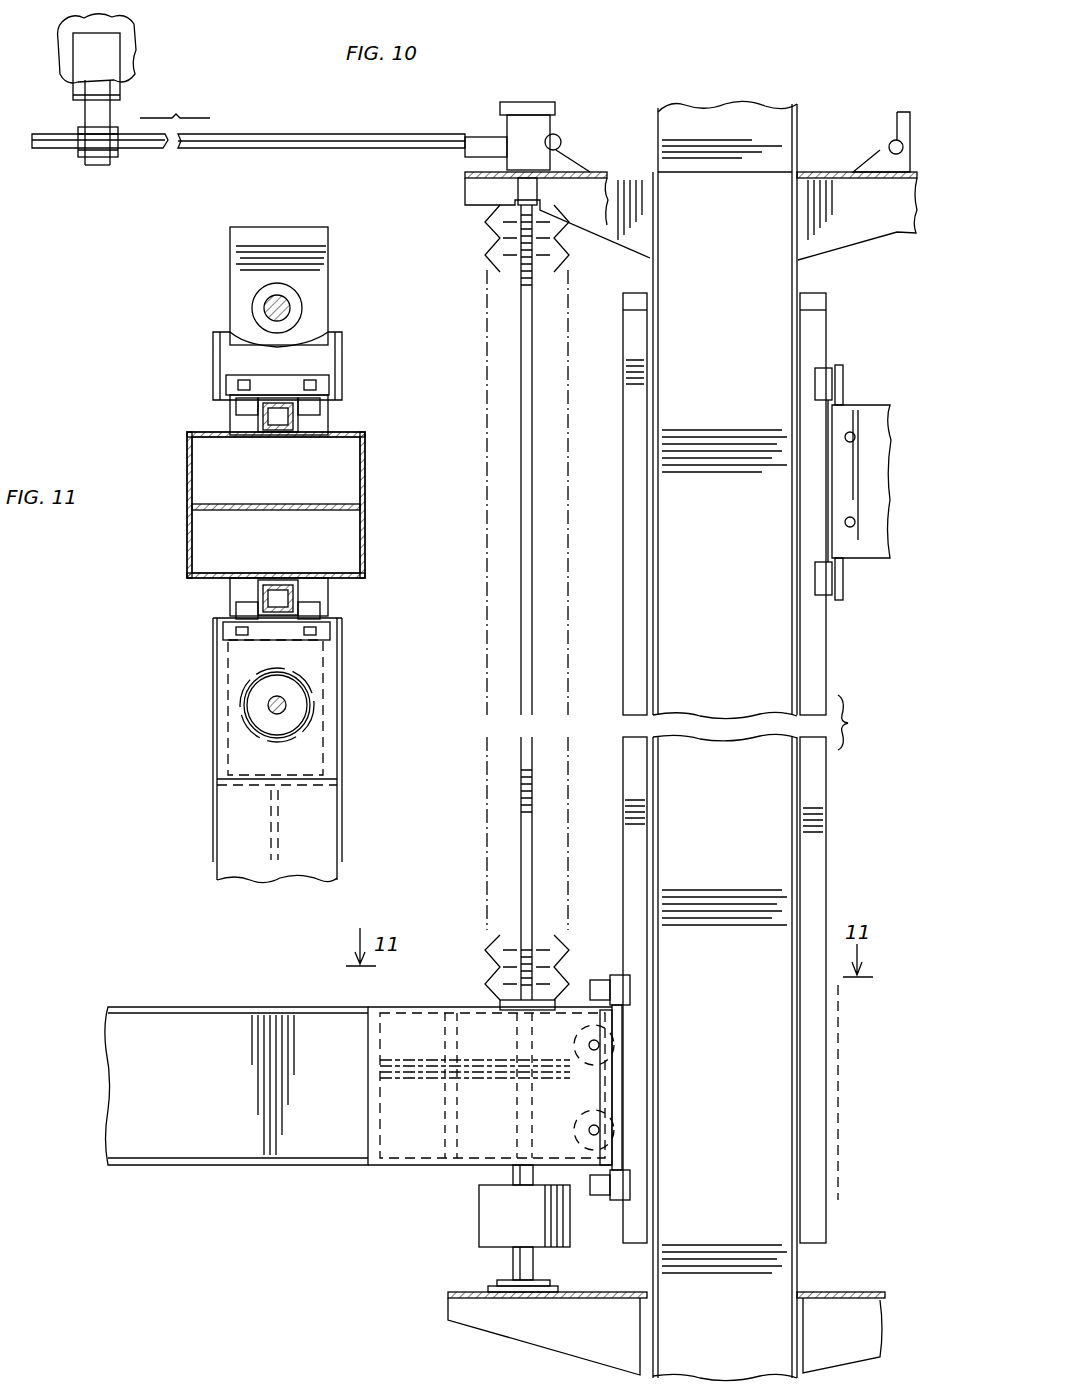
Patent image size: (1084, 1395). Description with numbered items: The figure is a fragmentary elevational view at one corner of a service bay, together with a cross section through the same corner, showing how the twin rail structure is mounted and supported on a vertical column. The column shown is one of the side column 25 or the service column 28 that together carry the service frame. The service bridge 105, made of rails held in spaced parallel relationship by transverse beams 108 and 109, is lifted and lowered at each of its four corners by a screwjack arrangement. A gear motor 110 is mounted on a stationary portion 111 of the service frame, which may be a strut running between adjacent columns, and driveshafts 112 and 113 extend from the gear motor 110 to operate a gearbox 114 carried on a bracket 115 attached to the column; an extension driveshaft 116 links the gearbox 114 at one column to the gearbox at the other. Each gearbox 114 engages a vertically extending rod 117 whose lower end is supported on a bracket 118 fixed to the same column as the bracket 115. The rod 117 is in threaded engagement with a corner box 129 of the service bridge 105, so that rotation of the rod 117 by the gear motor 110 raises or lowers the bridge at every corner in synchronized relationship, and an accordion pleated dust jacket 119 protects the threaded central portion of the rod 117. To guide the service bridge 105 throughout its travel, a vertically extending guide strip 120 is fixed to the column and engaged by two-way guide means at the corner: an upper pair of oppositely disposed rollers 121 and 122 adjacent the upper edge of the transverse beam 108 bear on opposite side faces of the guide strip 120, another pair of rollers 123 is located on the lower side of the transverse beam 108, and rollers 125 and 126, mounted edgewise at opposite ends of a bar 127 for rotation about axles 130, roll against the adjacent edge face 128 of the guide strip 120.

In FIG. 10, the side column 25 is at (792, 140).
In FIG. 11, the side column 25 is at (187, 562).
In FIG. 10, the service column 28 is at (727, 136).
In FIG. 10, the service bridge 105 is at (165, 1007).
In FIG. 10, the transverse beam 108 is at (882, 405).
In FIG. 11, the transverse beam 108 is at (215, 868).
In FIG. 10, the transverse beam 109 is at (224, 1012).
In FIG. 10, the gear motor 110 is at (105, 67).
In FIG. 10, the stationary portion 111 is at (128, 48).
In FIG. 10, the driveshaft 112 is at (222, 148).
In FIG. 10, the driveshaft 113 is at (48, 150).
In FIG. 10, the gearbox 114 is at (557, 108).
In FIG. 10, the bracket 115 is at (612, 235).
In FIG. 10, the extension driveshaft 116 is at (561, 139).
In FIG. 10, the rod 117 is at (520, 323).
In FIG. 11, the rod 117 is at (270, 308).
In FIG. 10, the bracket 118 is at (460, 1292).
In FIG. 11, the bracket 118 is at (237, 266).
In FIG. 10, the dust jacket 119 is at (487, 262).
In FIG. 11, the dust jacket 119 is at (310, 722).
In FIG. 10, the guide strip 120 is at (623, 491).
In FIG. 11, the guide strip 120 is at (296, 420).
In FIG. 11, the roller 121 is at (240, 404).
In FIG. 10, the roller 122 is at (631, 988).
In FIG. 11, the roller 122 is at (320, 404).
In FIG. 10, the rollers 123 is at (617, 1207).
In FIG. 10, the roller 125 is at (616, 1046).
In FIG. 10, the roller 126 is at (616, 1133).
In FIG. 10, the bar 127 is at (614, 1085).
In FIG. 10, the edge face 128 is at (623, 815).
In FIG. 11, the edge face 128 is at (290, 642).
In FIG. 10, the corner box 129 is at (425, 1012).
In FIG. 11, the corner box 129 is at (215, 745).
In FIG. 10, the axle 130 is at (597, 1045).